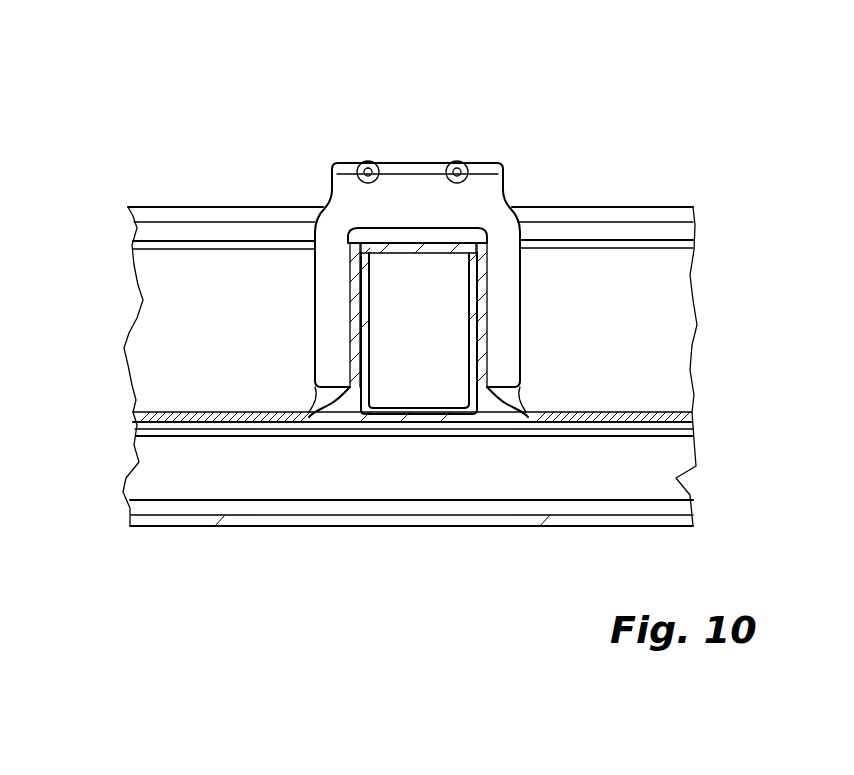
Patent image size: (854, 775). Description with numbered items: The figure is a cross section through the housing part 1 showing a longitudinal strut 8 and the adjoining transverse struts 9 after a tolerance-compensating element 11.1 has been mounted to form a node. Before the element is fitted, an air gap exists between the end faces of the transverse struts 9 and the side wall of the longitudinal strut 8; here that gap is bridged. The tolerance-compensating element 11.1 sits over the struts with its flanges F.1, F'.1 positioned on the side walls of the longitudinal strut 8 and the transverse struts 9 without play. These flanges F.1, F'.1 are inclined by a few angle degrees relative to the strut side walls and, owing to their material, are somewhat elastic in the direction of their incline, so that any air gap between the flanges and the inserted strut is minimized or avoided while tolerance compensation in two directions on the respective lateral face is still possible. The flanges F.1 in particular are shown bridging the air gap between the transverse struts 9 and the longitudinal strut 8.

The housing part 1 is at (231, 178).
The tolerance-compensating element 11.1 is at (399, 160).
The transverse struts 9 is at (206, 338).
The longitudinal strut 8 is at (479, 403).
The flange F'.1 is at (482, 265).
The flange F.1 is at (506, 292).